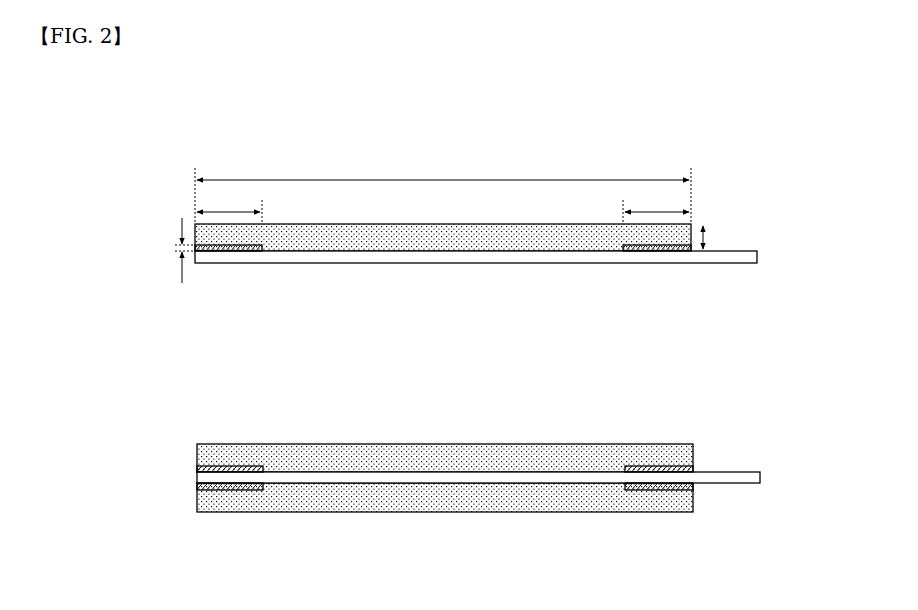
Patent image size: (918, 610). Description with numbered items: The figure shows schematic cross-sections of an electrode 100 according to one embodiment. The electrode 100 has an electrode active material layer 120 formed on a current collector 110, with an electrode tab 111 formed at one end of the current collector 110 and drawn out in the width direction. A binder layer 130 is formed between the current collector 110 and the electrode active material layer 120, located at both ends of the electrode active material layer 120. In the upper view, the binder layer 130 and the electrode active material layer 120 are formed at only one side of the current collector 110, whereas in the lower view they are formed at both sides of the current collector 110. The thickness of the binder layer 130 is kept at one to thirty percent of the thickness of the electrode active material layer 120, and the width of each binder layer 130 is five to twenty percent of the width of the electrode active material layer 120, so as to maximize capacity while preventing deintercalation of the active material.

The electrode 100 is at (170, 147).
The current collector 110 is at (240, 265).
The electrode tab 111 is at (757, 258).
The electrode active material layer 120 is at (337, 247).
The binder layer 130 is at (648, 253).